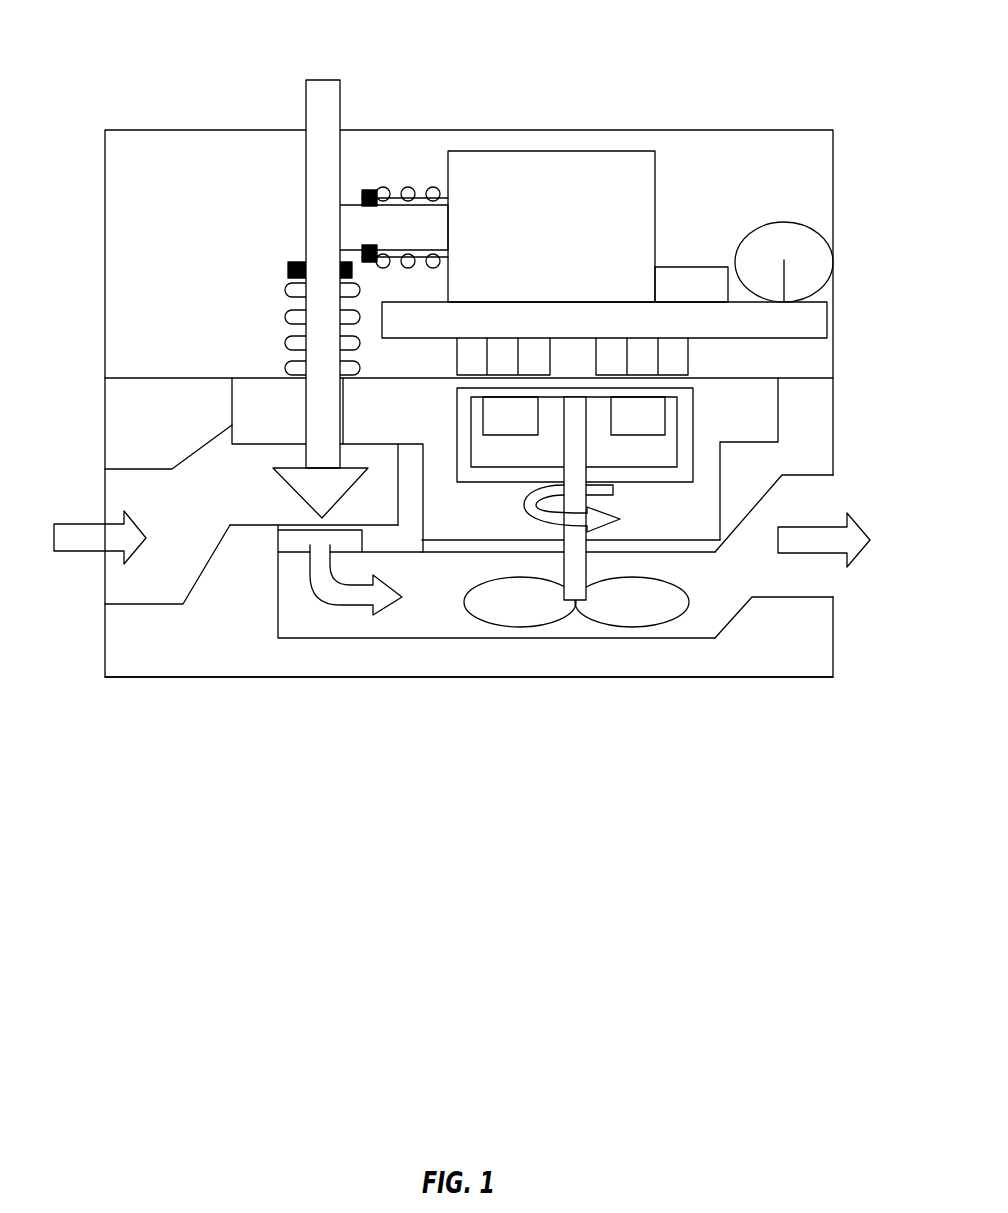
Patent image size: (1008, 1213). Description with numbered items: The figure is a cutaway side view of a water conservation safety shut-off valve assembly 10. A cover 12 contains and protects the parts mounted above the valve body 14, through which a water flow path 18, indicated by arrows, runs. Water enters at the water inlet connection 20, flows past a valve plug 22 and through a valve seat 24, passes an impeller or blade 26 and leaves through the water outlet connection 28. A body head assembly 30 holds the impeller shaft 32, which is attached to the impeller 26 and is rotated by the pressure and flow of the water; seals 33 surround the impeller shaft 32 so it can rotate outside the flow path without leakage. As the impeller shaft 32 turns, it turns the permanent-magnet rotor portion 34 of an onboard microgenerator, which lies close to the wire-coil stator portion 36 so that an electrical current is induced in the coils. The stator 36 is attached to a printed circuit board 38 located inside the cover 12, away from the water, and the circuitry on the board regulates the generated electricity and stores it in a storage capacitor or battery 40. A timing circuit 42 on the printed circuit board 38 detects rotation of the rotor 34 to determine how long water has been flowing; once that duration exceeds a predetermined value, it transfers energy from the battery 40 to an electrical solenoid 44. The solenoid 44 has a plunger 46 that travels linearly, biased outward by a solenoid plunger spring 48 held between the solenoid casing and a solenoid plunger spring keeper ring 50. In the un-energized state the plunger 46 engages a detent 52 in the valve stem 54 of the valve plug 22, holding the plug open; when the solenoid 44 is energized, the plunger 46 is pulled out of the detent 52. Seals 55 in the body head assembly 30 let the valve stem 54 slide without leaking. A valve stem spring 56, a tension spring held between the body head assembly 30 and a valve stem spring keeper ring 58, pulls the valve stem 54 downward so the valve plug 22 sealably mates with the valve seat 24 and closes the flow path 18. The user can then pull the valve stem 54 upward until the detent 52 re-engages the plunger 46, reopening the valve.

The valve assembly 10 is at (672, 45).
The cover 12 is at (803, 128).
The valve body 14 is at (600, 678).
The water flow path 18 is at (75, 536).
The water inlet connection 20 is at (123, 500).
The valve plug 22 is at (300, 478).
The valve seat 24 is at (278, 528).
The impeller or blade 26 is at (645, 612).
The water outlet connection 28 is at (833, 498).
The body head assembly 30 is at (690, 522).
The impeller shaft 32 is at (577, 498).
The seals 33 is at (560, 537).
The rotor portion 34 is at (688, 420).
The stator portion 36 is at (673, 347).
The printed circuit board 38 is at (812, 327).
The storage capacitor or battery 40 is at (807, 237).
The timing circuit 42 is at (678, 267).
The solenoid 44 is at (588, 173).
The solenoid plunger 46 is at (417, 222).
The solenoid plunger spring 48 is at (407, 187).
The solenoid plunger spring keeper ring 50 is at (369, 188).
The detent 52 is at (330, 213).
The valve stem 54 is at (317, 77).
The seal 55 is at (340, 420).
The valve stem spring 56 is at (280, 343).
The valve stem spring keeper ring 58 is at (297, 263).